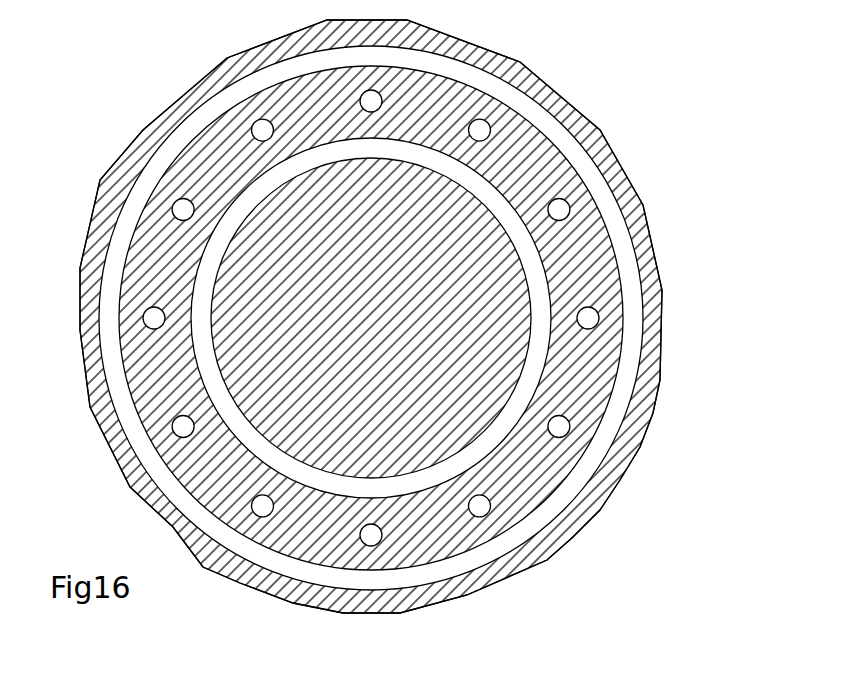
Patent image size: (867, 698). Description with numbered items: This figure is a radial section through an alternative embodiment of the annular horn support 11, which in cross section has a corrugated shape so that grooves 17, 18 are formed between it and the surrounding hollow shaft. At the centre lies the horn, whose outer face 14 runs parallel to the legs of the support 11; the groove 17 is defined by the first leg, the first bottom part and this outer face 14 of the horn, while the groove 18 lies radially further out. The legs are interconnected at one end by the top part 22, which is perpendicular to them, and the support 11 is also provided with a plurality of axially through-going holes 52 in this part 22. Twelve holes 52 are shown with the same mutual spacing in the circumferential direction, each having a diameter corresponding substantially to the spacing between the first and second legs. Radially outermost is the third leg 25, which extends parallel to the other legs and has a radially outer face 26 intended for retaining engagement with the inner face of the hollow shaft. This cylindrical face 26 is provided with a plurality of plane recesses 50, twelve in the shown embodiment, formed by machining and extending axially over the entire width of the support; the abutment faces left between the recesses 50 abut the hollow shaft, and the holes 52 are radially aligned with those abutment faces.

The horn support 11 is at (647, 457).
The outer face of the horn 14 is at (472, 190).
The groove 17 is at (530, 362).
The groove 18 is at (632, 268).
The top part 22 is at (590, 343).
The third leg 25 is at (625, 190).
The radially outer face 26 is at (525, 62).
The recesses 50 is at (588, 115).
The axially through-going holes 52 is at (559, 209).